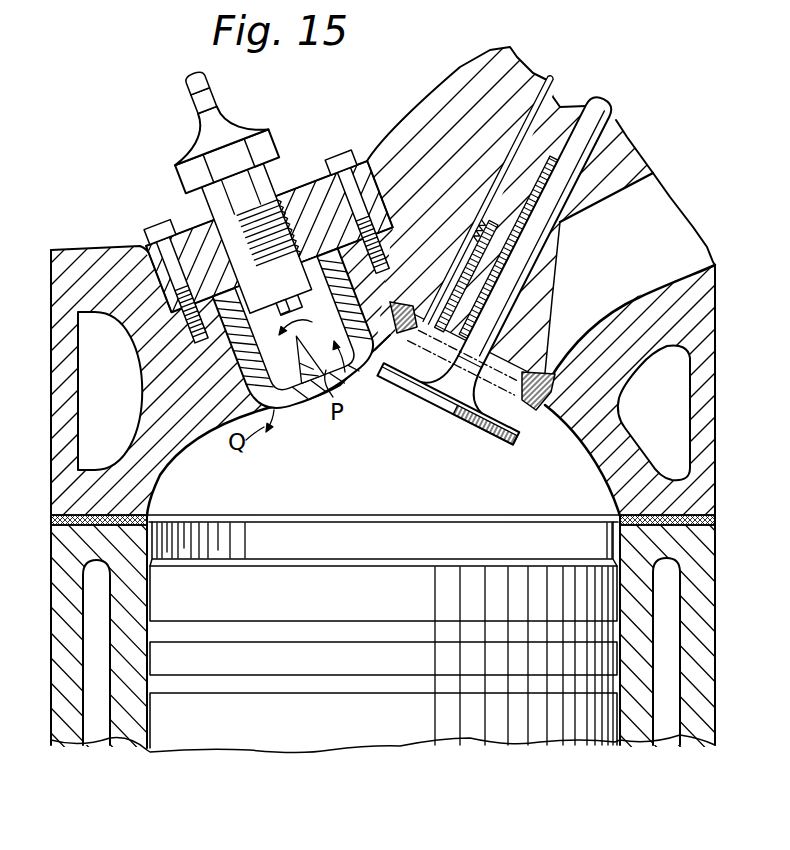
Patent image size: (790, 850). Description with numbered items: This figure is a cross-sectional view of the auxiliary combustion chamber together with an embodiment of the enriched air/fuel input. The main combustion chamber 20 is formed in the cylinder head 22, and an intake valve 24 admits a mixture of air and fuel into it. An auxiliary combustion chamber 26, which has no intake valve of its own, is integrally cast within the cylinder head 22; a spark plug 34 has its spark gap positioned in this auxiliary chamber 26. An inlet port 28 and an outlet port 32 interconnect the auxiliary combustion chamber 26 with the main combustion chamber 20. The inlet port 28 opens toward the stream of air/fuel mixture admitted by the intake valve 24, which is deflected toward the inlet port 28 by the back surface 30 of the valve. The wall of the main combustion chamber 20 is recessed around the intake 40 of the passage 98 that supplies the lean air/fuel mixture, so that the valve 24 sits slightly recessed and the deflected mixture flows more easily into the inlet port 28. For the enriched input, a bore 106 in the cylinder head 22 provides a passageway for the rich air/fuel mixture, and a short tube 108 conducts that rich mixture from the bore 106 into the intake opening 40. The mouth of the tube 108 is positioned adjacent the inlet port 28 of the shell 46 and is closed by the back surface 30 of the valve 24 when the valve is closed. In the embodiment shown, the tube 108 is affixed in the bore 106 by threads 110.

The main combustion chamber 20 is at (380, 492).
The cylinder head 22 is at (468, 151).
The intake valve 24 is at (497, 452).
The auxiliary combustion chamber 26 is at (330, 317).
The inlet port 28 is at (357, 372).
The back surface 30 is at (417, 372).
The outlet port 32 is at (285, 372).
The spark plug 34 is at (282, 133).
The intake 40 is at (535, 362).
The shell 46 is at (232, 372).
The passage 98 is at (645, 241).
The bore 106 is at (541, 134).
The short tube 108 is at (447, 272).
The threads 110 is at (470, 232).